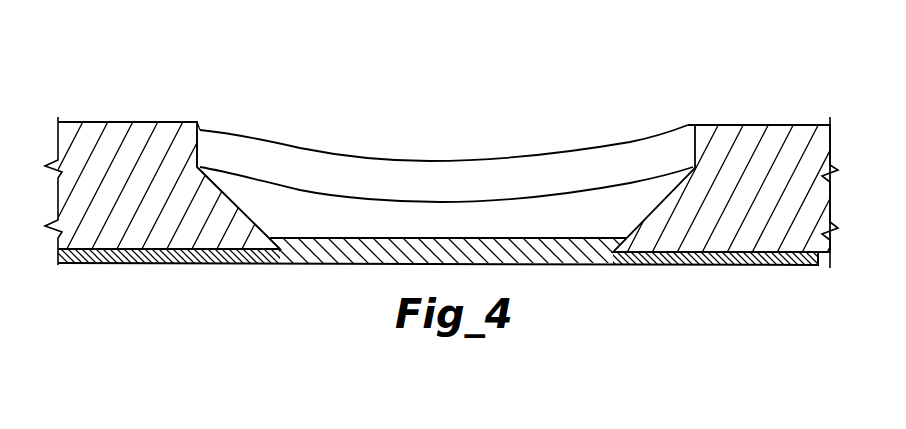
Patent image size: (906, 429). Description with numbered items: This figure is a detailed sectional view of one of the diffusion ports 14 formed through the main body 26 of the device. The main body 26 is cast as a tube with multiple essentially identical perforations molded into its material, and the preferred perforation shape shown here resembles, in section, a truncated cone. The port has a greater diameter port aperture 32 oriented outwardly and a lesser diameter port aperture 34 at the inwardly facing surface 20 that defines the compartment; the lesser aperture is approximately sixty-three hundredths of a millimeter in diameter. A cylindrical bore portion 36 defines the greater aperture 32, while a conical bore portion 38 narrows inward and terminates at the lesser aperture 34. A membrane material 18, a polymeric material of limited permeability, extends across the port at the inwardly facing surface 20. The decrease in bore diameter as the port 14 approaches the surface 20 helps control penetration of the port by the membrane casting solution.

The diffusion port 14 is at (468, 170).
The membrane material 18 is at (395, 250).
The inwardly facing surface 20 is at (199, 261).
The main body 26 is at (755, 125).
The greater diameter port aperture 32 is at (230, 118).
The lesser diameter port aperture 34 is at (295, 287).
The cylindrical bore portion 36 is at (200, 148).
The conical bore portion 38 is at (243, 207).